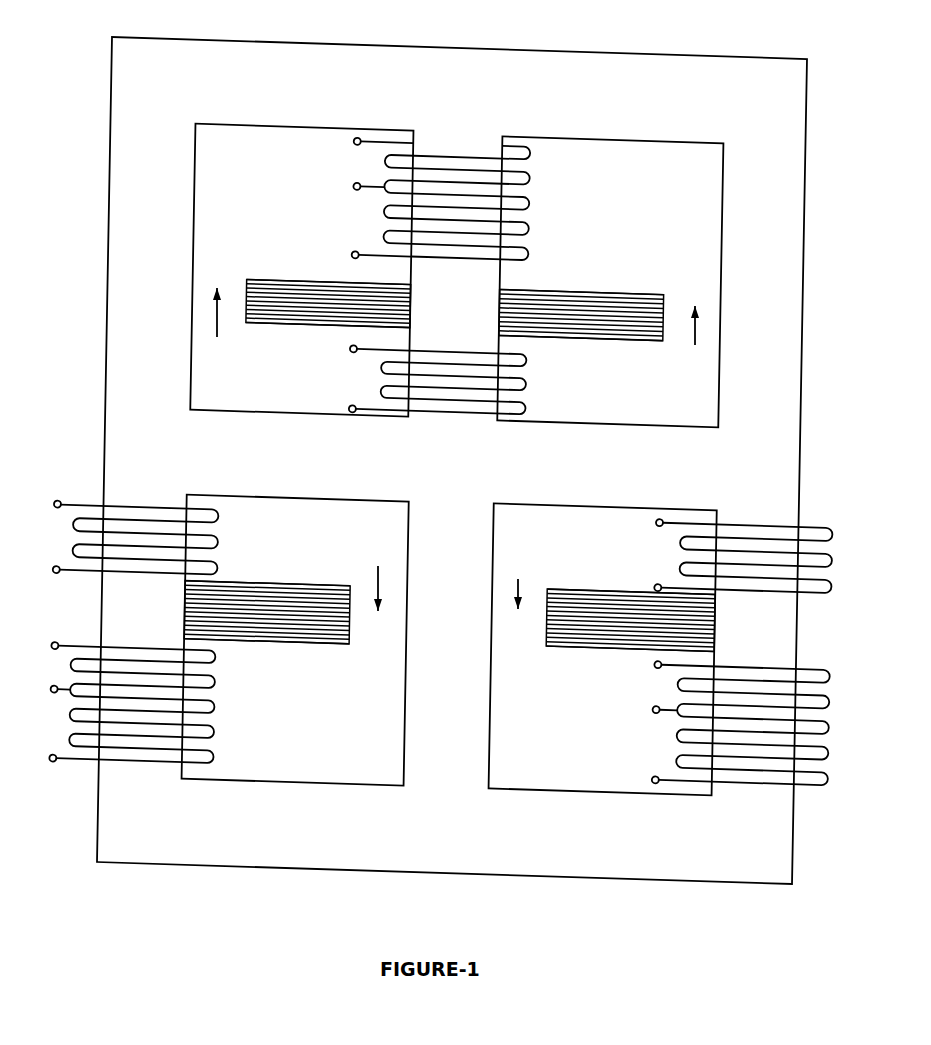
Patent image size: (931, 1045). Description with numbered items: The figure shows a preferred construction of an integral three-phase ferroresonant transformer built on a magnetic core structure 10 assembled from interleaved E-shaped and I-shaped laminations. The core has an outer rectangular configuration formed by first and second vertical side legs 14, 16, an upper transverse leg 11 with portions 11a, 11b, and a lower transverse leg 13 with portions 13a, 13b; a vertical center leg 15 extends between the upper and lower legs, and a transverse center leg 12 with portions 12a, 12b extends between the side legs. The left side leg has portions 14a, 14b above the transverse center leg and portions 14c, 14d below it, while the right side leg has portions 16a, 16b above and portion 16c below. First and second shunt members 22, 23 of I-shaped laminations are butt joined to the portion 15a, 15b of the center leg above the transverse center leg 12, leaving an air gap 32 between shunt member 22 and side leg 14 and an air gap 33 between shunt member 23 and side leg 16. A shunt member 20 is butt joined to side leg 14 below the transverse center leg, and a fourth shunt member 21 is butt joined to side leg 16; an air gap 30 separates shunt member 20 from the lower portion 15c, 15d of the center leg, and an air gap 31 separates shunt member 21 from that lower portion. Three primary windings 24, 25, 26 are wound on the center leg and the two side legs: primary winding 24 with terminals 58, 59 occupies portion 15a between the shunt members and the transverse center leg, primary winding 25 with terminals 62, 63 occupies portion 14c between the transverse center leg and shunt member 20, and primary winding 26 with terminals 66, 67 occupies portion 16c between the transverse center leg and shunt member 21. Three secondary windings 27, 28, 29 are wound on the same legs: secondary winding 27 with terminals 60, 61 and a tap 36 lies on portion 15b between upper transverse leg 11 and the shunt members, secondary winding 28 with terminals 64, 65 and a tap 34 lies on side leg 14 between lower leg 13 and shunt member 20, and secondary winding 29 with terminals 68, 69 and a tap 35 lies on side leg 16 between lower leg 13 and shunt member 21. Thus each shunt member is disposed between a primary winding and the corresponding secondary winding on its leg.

The magnetic core structure 10 is at (452, 477).
The upper transverse leg 11 is at (262, 102).
The top leg left portion 11a is at (362, 104).
The top leg right portion 11b is at (605, 113).
The transverse center leg 12 is at (177, 435).
The center leg left portion 12a is at (272, 474).
The center leg right portion 12b is at (738, 454).
The lower transverse leg 13 is at (217, 815).
The bottom leg left portion 13a is at (337, 820).
The bottom leg right portion 13b is at (598, 828).
The first vertical side leg 14 is at (177, 231).
The left leg lower portion 14a is at (177, 377).
The left leg upper portion 14b is at (177, 152).
The portion of vertical side leg 14c is at (142, 540).
The portion of vertical side leg 14d is at (148, 657).
The vertical center leg 15 is at (463, 142).
The portion of vertical center leg 15a is at (438, 384).
The portion of vertical center leg 15b is at (470, 216).
The lower portion of center leg 15c is at (458, 527).
The lower portion of center leg 15d is at (452, 705).
The second vertical side leg 16 is at (738, 224).
The right leg lower portion 16a is at (738, 364).
The right leg upper portion 16b is at (738, 164).
The portion of vertical side leg 16c is at (763, 533).
The shunt member 20 is at (295, 579).
The fourth shunt member 21 is at (592, 593).
The first shunt member 22 is at (273, 281).
The second shunt member 23 is at (636, 291).
The primary winding 24 is at (532, 385).
The primary winding 25 is at (227, 536).
The primary winding 26 is at (836, 563).
The secondary winding 27 is at (537, 182).
The secondary winding 28 is at (222, 685).
The secondary winding 29 is at (830, 676).
The air gap 30 is at (379, 580).
The air gap 31 is at (519, 585).
The air gap 32 is at (217, 325).
The air gap 33 is at (694, 339).
The tap 34 is at (52, 688).
The tap 35 is at (650, 710).
The tap 36 is at (350, 190).
The terminal 58 is at (368, 352).
The terminal 59 is at (366, 406).
The terminal 60 is at (373, 142).
The terminal 61 is at (372, 257).
The terminal 62 is at (45, 505).
The terminal 63 is at (45, 572).
The terminal 64 is at (44, 646).
The terminal 65 is at (43, 761).
The terminal 66 is at (648, 522).
The terminal 67 is at (645, 590).
The terminal 68 is at (646, 666).
The terminal 69 is at (644, 781).